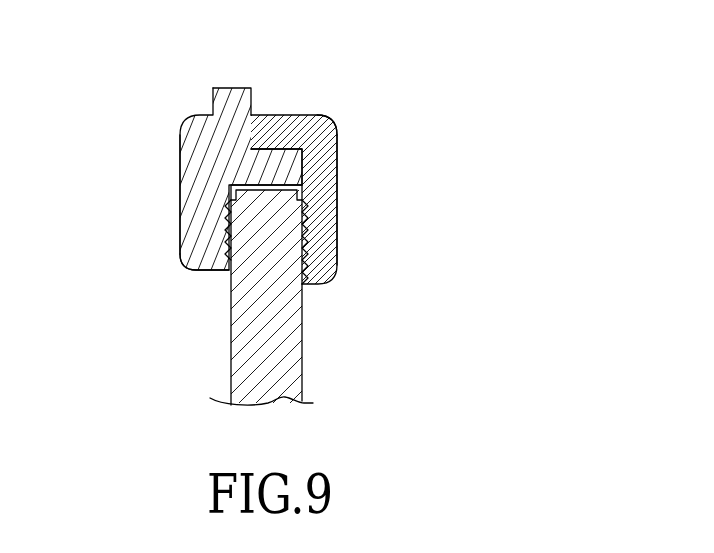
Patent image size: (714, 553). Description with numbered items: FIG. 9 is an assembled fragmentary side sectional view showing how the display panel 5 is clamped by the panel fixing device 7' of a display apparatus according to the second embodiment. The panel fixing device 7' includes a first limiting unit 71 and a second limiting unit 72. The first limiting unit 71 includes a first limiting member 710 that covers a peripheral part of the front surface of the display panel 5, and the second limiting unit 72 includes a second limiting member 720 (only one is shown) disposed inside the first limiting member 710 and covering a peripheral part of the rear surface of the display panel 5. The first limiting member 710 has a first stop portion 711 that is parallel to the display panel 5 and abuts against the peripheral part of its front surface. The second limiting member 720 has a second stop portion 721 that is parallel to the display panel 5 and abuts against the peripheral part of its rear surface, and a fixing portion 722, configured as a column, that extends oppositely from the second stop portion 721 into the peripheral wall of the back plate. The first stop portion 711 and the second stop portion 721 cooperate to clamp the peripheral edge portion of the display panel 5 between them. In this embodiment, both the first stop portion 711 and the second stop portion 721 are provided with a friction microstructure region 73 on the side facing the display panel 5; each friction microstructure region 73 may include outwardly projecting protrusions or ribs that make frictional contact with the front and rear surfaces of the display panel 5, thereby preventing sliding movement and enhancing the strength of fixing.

The display panel 5 is at (292, 352).
The panel fixing device 7' is at (291, 157).
The first limiting unit 71 is at (352, 228).
The first limiting member 710 is at (342, 103).
The first stop portion 711 is at (352, 169).
The second limiting unit 72 is at (205, 169).
The second limiting member 720 is at (172, 215).
The second stop portion 721 is at (180, 237).
The fixing portion 722 is at (229, 114).
The friction microstructure region 73 is at (235, 258).